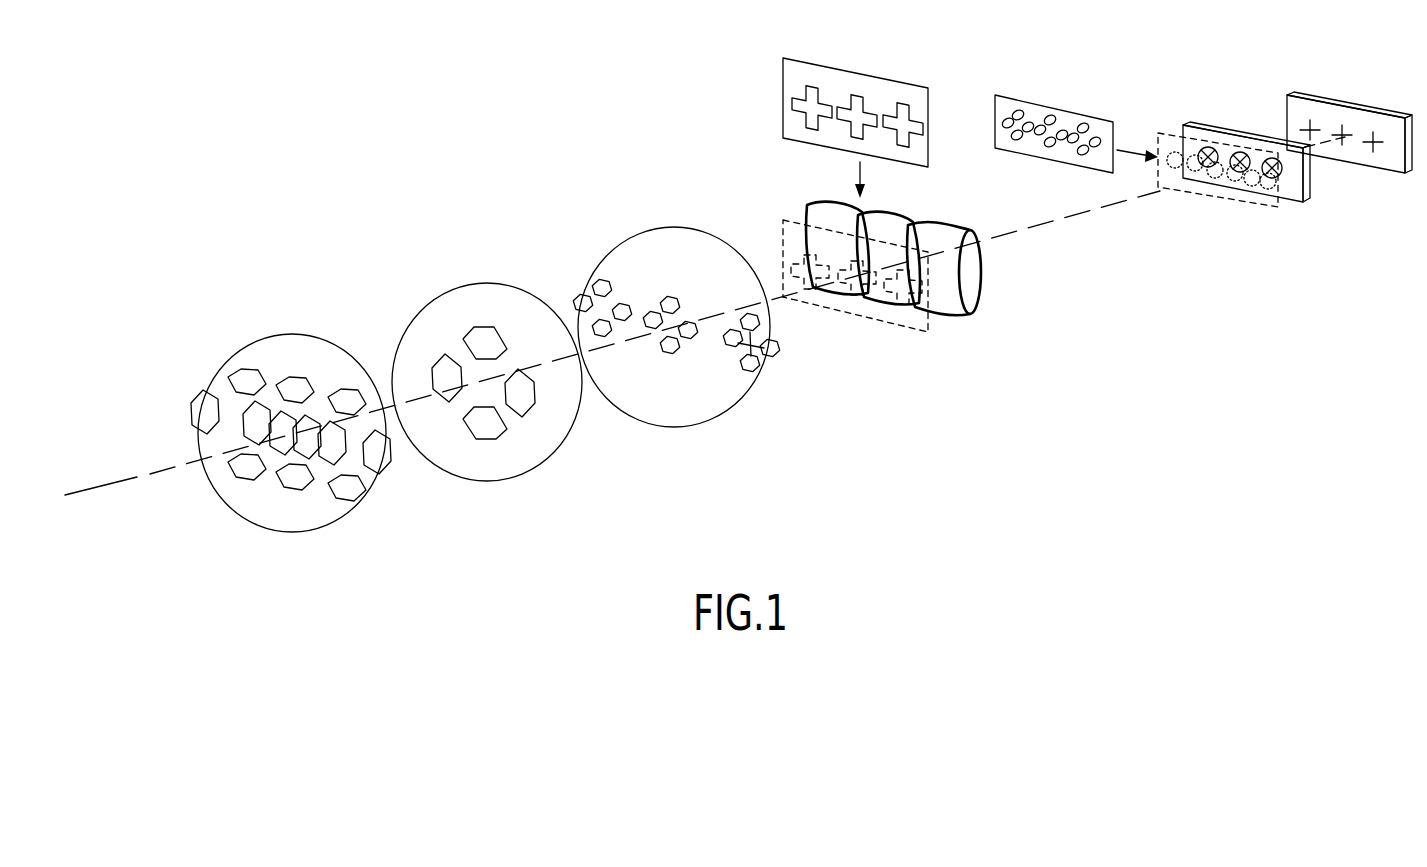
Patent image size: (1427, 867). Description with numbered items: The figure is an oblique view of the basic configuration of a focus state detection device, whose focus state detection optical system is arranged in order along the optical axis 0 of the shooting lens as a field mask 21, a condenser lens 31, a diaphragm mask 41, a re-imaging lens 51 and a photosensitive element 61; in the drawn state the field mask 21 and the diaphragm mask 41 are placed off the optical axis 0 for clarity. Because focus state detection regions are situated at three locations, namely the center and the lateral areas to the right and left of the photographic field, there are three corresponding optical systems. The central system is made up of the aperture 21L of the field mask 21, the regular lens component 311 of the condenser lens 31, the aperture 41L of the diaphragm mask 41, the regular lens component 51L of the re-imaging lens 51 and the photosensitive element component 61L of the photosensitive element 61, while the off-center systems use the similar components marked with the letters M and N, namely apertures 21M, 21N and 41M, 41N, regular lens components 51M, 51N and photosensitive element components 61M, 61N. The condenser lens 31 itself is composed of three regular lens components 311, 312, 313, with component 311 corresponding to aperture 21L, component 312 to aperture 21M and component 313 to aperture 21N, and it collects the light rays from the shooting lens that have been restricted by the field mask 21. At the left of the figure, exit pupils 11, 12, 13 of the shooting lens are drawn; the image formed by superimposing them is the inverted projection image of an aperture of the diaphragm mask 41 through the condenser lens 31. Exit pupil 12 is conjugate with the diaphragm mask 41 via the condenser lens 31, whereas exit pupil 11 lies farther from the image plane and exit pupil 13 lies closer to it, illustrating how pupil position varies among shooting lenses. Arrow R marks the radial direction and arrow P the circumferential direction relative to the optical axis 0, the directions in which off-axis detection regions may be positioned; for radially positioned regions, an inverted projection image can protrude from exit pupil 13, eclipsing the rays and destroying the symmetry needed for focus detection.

The optical axis 0 is at (704, 316).
The exit pupil 11 is at (332, 527).
The exit pupil 12 is at (522, 478).
The exit pupil 13 is at (685, 370).
The arrow R is at (755, 345).
The arrow P is at (745, 352).
The condenser lens 31 is at (863, 289).
The regular lens component 311 is at (868, 217).
The regular lens component 312 is at (805, 238).
The regular lens component 313 is at (927, 223).
The field mask 21 is at (846, 113).
The aperture 21M is at (797, 92).
The aperture 21L is at (835, 128).
The aperture 21N is at (910, 110).
The diaphragm mask 41 is at (1053, 115).
The aperture 41M is at (1010, 121).
The aperture 41L is at (1052, 143).
The aperture 41N is at (1092, 130).
The re-imaging lens 51 is at (1258, 175).
The regular lens component 51M is at (1207, 150).
The regular lens component 51L is at (1243, 157).
The regular lens component 51N is at (1283, 172).
The photosensitive element 61 is at (1349, 143).
The photosensitive element component 61M is at (1310, 98).
The photosensitive element component 61L is at (1342, 140).
The photosensitive element component 61N is at (1377, 130).